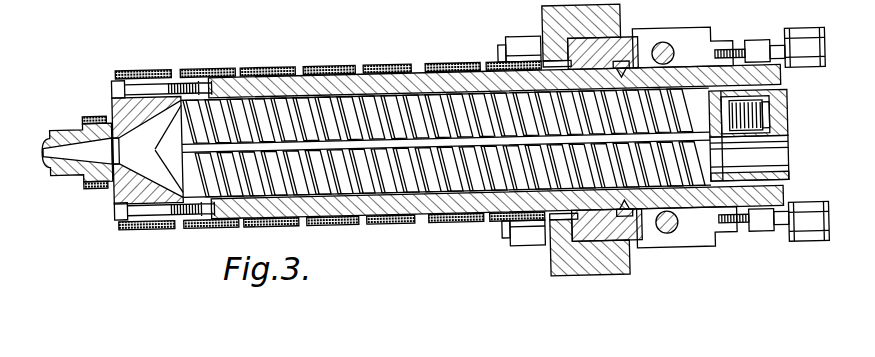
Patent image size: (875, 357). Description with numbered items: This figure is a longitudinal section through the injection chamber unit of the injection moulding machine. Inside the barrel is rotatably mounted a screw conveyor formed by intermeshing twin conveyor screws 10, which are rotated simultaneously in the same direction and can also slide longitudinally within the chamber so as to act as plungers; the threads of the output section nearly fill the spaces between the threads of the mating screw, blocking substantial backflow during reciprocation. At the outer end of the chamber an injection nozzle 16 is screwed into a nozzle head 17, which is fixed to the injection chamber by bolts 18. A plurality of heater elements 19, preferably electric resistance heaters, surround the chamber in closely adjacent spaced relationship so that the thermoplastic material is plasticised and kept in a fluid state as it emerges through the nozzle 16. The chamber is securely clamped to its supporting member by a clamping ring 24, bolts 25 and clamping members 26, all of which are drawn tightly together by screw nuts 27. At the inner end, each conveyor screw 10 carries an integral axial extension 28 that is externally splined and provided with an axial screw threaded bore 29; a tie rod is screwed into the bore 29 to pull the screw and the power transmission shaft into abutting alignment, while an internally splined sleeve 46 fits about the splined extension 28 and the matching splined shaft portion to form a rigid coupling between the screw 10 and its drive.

The conveyor screws 10 is at (268, 106).
The injection nozzle 16 is at (52, 131).
The nozzle head 17 is at (133, 93).
The bolts 18 is at (113, 80).
The heater elements 19 is at (173, 58).
The clamping ring 24 is at (557, 27).
The bolts 25 is at (500, 53).
The clamping members 26 is at (680, 42).
The screw nuts 27 is at (808, 78).
The axial extension 28 is at (772, 162).
The screw threaded bore 29 is at (768, 118).
The internally splined sleeve 46 is at (757, 106).